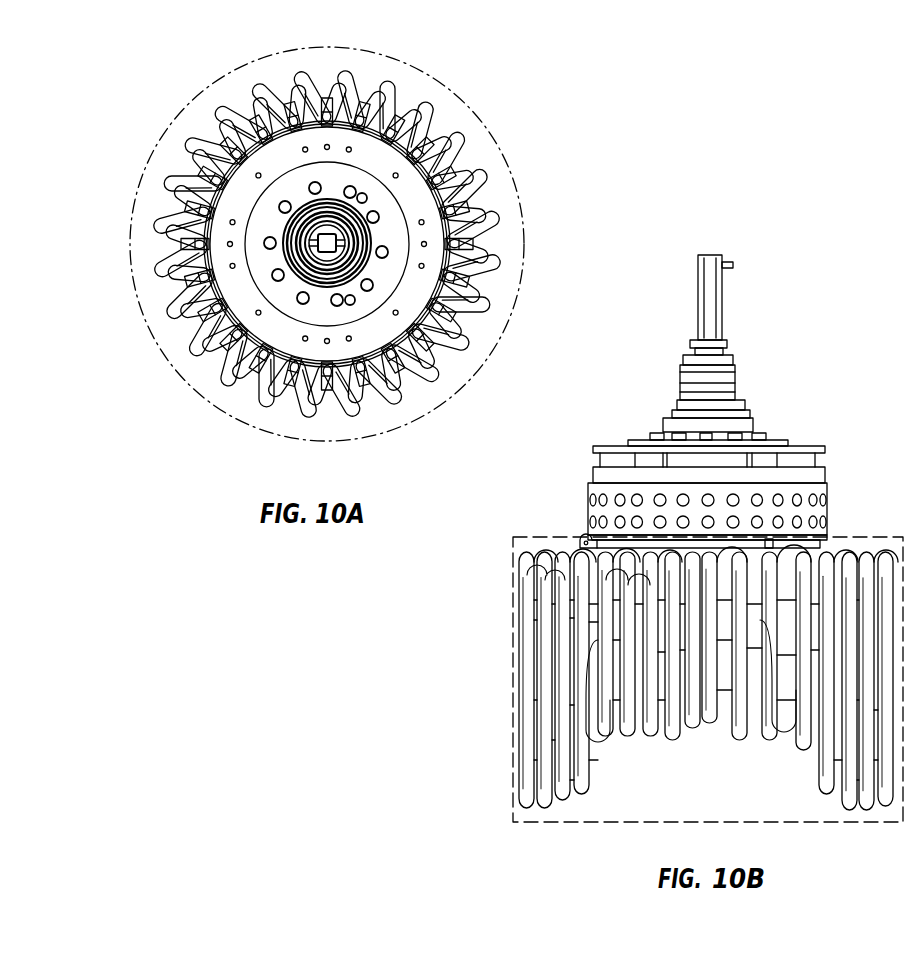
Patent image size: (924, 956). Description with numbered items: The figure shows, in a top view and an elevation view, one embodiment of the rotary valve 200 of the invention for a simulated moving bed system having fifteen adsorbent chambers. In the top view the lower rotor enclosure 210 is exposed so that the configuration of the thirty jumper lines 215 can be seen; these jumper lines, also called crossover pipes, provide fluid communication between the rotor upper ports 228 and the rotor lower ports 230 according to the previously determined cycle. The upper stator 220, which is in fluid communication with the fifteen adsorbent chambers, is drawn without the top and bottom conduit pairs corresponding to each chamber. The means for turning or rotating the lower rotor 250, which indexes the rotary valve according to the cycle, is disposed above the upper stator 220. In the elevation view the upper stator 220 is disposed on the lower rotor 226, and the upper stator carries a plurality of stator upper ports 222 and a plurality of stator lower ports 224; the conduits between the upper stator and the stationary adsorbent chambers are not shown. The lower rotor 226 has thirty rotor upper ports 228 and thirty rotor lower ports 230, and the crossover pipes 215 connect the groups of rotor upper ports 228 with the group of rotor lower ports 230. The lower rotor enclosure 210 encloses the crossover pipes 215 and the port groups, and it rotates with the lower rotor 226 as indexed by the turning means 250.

In FIG. 10A, the rotary valve 200 is at (397, 318).
In FIG. 10B, the rotary valve 200 is at (806, 440).
In FIG. 10A, the lower rotor enclosure 210 is at (357, 440).
In FIG. 10B, the lower rotor enclosure 210 is at (800, 827).
In FIG. 10A, the jumper lines 215 is at (505, 216).
In FIG. 10B, the jumper lines 215 is at (587, 800).
In FIG. 10A, the upper stator 220 is at (145, 243).
In FIG. 10B, the upper stator 220 is at (690, 476).
In FIG. 10B, the stator upper ports 222 is at (588, 500).
In FIG. 10B, the stator lower ports 224 is at (590, 522).
In FIG. 10B, the lower rotor 226 is at (828, 540).
In FIG. 10B, the rotor upper ports 228 is at (580, 570).
In FIG. 10B, the rotor lower ports 230 is at (623, 587).
In FIG. 10A, the means for turning or rotating the lower rotor 250 is at (320, 282).
In FIG. 10B, the means for turning or rotating the lower rotor 250 is at (736, 386).